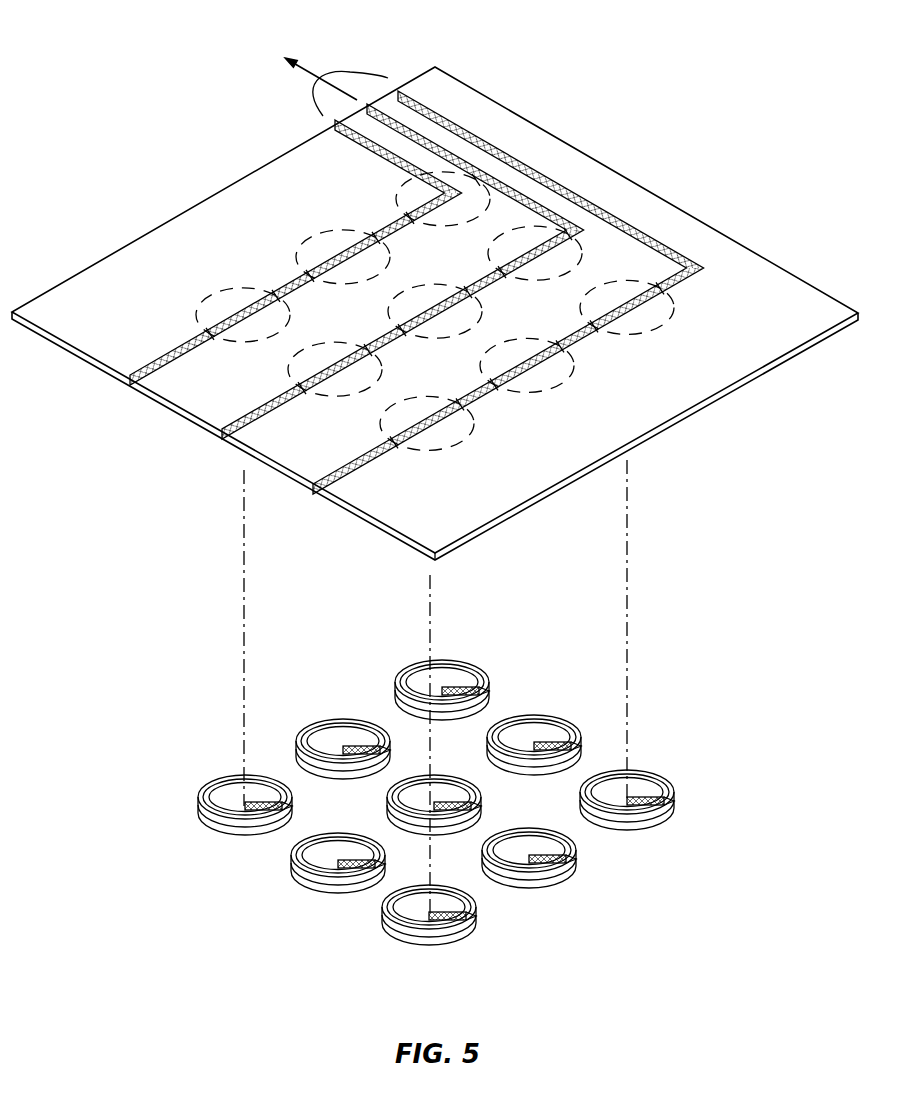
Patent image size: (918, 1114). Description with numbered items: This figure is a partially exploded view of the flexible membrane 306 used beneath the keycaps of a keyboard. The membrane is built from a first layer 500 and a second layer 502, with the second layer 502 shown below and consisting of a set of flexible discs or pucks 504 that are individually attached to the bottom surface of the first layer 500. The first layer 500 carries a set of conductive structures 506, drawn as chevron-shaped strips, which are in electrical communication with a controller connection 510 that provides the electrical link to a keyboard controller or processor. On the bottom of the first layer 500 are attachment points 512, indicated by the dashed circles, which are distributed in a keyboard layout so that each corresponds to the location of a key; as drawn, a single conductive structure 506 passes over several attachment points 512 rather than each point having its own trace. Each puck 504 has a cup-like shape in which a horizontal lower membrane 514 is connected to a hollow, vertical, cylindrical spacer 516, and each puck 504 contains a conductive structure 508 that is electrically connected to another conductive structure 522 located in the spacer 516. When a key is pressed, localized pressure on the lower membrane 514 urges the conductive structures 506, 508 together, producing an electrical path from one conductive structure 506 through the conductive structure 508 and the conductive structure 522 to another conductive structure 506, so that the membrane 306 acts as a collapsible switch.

The flexible membrane 306 is at (170, 117).
The first layer 500 is at (518, 105).
The conductive structures 506 is at (598, 205).
The controller connection 510 is at (310, 69).
The attachment points 512 is at (664, 326).
The second layer 502 is at (725, 662).
The puck 504 is at (376, 922).
The spacer 516 is at (384, 903).
The lower membrane 514 is at (414, 918).
The conductive structure 508 is at (447, 913).
The conductive structure 522 is at (470, 910).